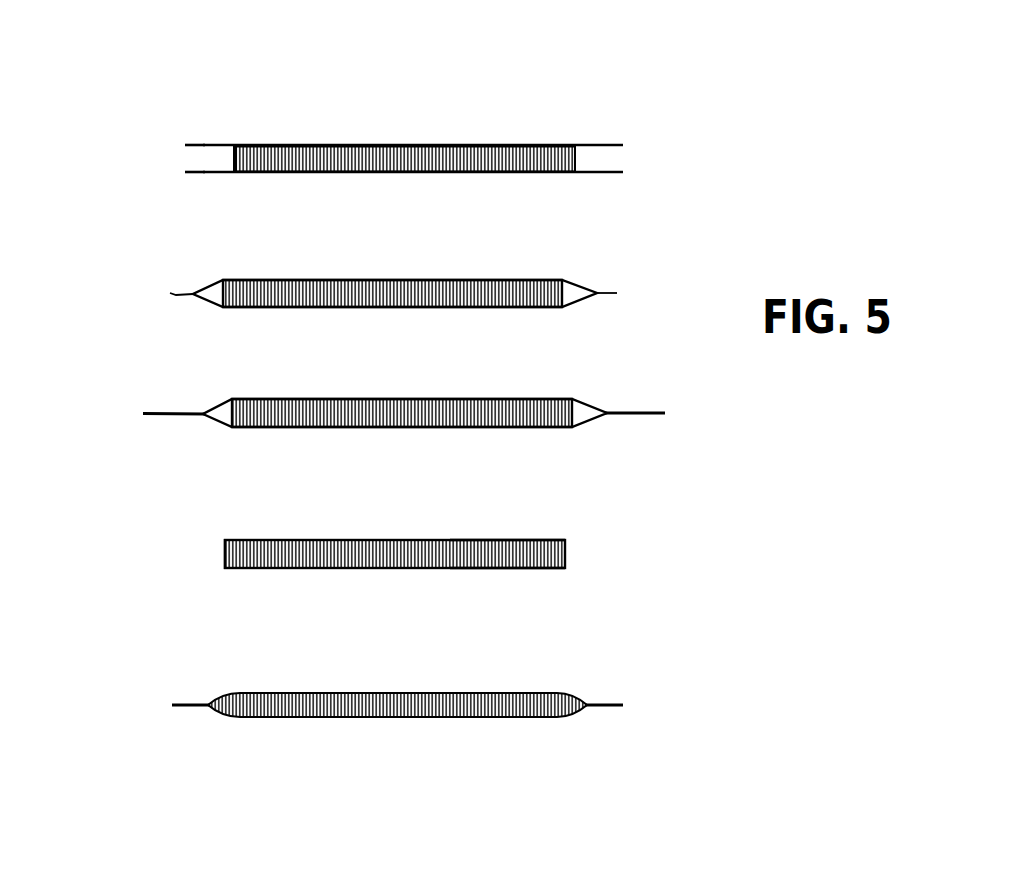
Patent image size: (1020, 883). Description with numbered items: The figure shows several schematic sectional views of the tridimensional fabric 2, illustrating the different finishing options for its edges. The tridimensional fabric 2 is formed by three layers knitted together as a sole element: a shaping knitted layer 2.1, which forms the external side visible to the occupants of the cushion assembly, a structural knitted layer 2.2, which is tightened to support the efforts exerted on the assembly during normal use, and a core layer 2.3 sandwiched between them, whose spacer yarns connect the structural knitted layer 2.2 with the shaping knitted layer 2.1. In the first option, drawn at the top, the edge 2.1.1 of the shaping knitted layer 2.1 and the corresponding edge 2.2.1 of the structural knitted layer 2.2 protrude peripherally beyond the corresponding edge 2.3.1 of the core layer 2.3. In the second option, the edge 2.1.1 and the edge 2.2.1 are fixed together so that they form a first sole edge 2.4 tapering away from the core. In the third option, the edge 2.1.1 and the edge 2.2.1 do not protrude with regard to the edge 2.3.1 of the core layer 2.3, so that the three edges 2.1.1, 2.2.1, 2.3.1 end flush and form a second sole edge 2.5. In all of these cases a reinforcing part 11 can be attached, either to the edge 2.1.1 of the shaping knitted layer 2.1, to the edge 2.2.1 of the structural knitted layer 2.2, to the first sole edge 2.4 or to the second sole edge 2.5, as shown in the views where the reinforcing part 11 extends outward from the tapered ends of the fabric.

The tridimensional fabric 2 is at (503, 80).
The shaping knitted layer 2.1 is at (343, 145).
The structural knitted layer 2.2 is at (343, 173).
The core layer 2.3 is at (418, 146).
The edge of the shaping knitted layer 2.1.1 is at (203, 145).
The edge of the structural knitted layer 2.2.1 is at (203, 173).
The edge of the core layer 2.3.1 is at (576, 161).
The first sole edge 2.4 is at (170, 296).
The second sole edge 2.5 is at (225, 550).
The reinforcing part 11 is at (143, 415).